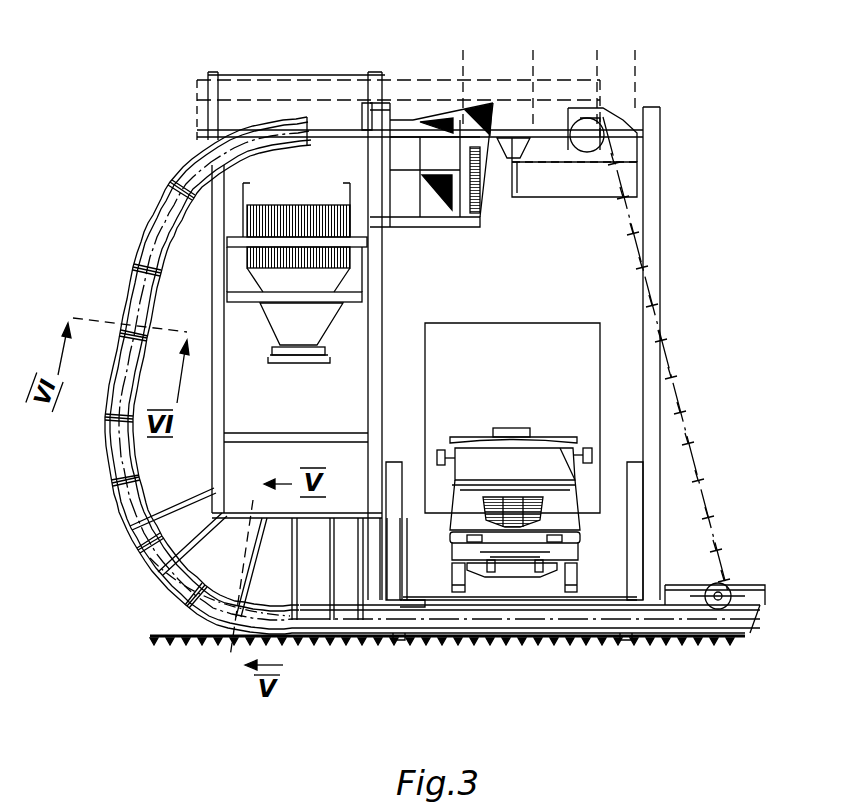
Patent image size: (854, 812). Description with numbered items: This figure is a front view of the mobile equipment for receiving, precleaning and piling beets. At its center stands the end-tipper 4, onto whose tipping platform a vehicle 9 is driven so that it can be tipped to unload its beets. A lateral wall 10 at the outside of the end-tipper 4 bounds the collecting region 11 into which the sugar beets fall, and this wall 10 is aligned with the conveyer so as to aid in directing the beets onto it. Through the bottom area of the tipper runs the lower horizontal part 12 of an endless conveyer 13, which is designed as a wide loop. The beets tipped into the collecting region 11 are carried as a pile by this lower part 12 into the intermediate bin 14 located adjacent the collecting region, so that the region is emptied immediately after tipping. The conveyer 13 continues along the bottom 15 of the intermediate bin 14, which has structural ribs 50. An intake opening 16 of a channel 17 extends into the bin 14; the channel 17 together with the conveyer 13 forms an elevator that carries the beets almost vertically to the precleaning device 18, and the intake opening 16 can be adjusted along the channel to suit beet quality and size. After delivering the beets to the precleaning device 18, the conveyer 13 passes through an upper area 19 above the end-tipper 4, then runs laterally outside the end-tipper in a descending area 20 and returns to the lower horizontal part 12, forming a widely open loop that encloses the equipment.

The end-tipper 4 is at (617, 320).
The vehicle 9 is at (582, 425).
The lateral wall 10 is at (633, 517).
The collecting region 11 is at (602, 578).
The lower horizontal part 12 is at (432, 615).
The endless conveyer 13 is at (155, 232).
The intermediate bin 14 is at (322, 578).
The bottom 15 is at (170, 588).
The intake opening 16 is at (200, 580).
The channel 17 is at (132, 300).
The precleaning device 18 is at (263, 185).
The upper area 19 is at (540, 127).
The descending area 20 is at (663, 345).
The structural ribs 50 is at (330, 607).